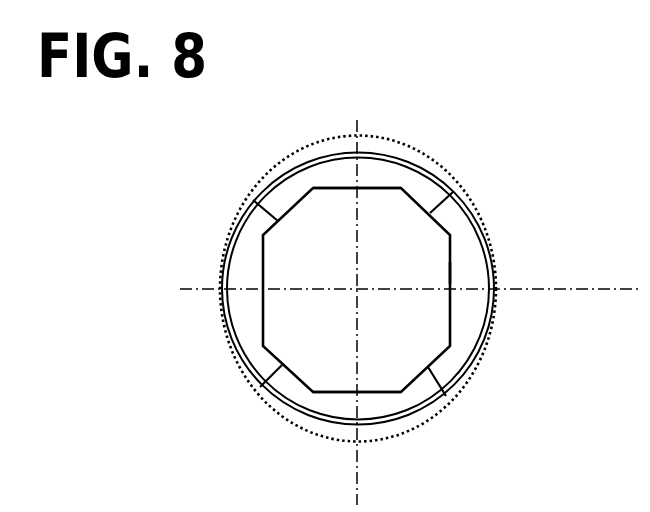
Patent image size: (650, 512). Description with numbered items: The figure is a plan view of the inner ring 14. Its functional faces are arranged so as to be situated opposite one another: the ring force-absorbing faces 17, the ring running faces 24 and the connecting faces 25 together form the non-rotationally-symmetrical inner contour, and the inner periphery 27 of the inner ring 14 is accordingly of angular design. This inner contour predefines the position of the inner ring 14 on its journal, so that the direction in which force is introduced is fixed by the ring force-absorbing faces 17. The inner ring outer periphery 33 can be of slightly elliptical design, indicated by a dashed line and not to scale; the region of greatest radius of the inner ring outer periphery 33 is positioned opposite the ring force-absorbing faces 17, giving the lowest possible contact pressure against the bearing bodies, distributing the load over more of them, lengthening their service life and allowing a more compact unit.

The inner ring 14 is at (465, 260).
The ring force-absorbing face 17 is at (263, 267).
The ring running face 24 is at (372, 186).
The connecting face 25 is at (253, 200).
The inner periphery 27 is at (452, 273).
The inner ring outer periphery 33 is at (220, 310).